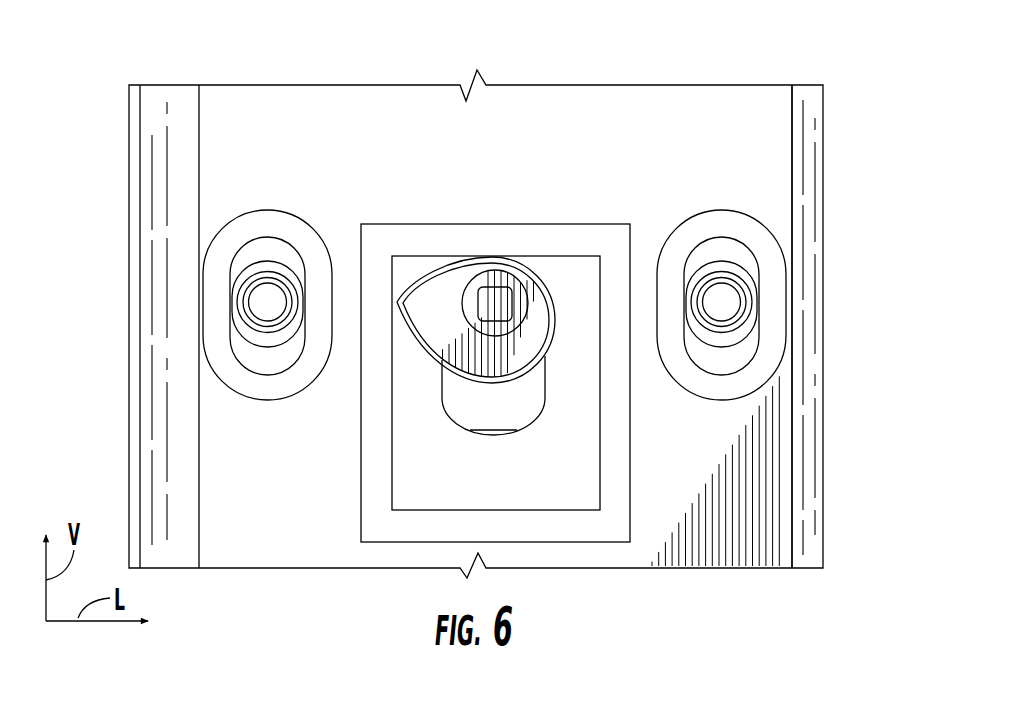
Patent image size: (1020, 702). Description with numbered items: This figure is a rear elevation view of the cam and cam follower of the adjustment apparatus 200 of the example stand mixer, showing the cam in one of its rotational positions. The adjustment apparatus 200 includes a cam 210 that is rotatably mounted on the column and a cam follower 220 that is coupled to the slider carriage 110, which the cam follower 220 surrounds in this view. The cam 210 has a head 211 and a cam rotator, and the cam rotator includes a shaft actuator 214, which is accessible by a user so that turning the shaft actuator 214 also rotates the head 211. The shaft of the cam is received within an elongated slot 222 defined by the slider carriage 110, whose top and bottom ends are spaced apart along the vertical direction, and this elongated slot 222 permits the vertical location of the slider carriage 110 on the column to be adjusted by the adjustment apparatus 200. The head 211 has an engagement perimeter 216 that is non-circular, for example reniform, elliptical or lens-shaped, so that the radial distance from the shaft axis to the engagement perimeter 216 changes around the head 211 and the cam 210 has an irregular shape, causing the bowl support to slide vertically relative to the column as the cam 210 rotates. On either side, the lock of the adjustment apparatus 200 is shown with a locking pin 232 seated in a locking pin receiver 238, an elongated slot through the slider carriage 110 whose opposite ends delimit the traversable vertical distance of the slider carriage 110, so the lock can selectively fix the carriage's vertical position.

The slider carriage 110 is at (263, 145).
The adjustment apparatus 200 is at (478, 298).
The cam 210 is at (406, 290).
The head 211 is at (435, 333).
The shaft actuator 214 is at (505, 297).
The engagement perimeter 216 is at (513, 380).
The cam follower 220 is at (467, 240).
The elongated slot 222 is at (443, 407).
The locking pin 232 is at (262, 300).
The locking pin receiver 238 is at (228, 330).